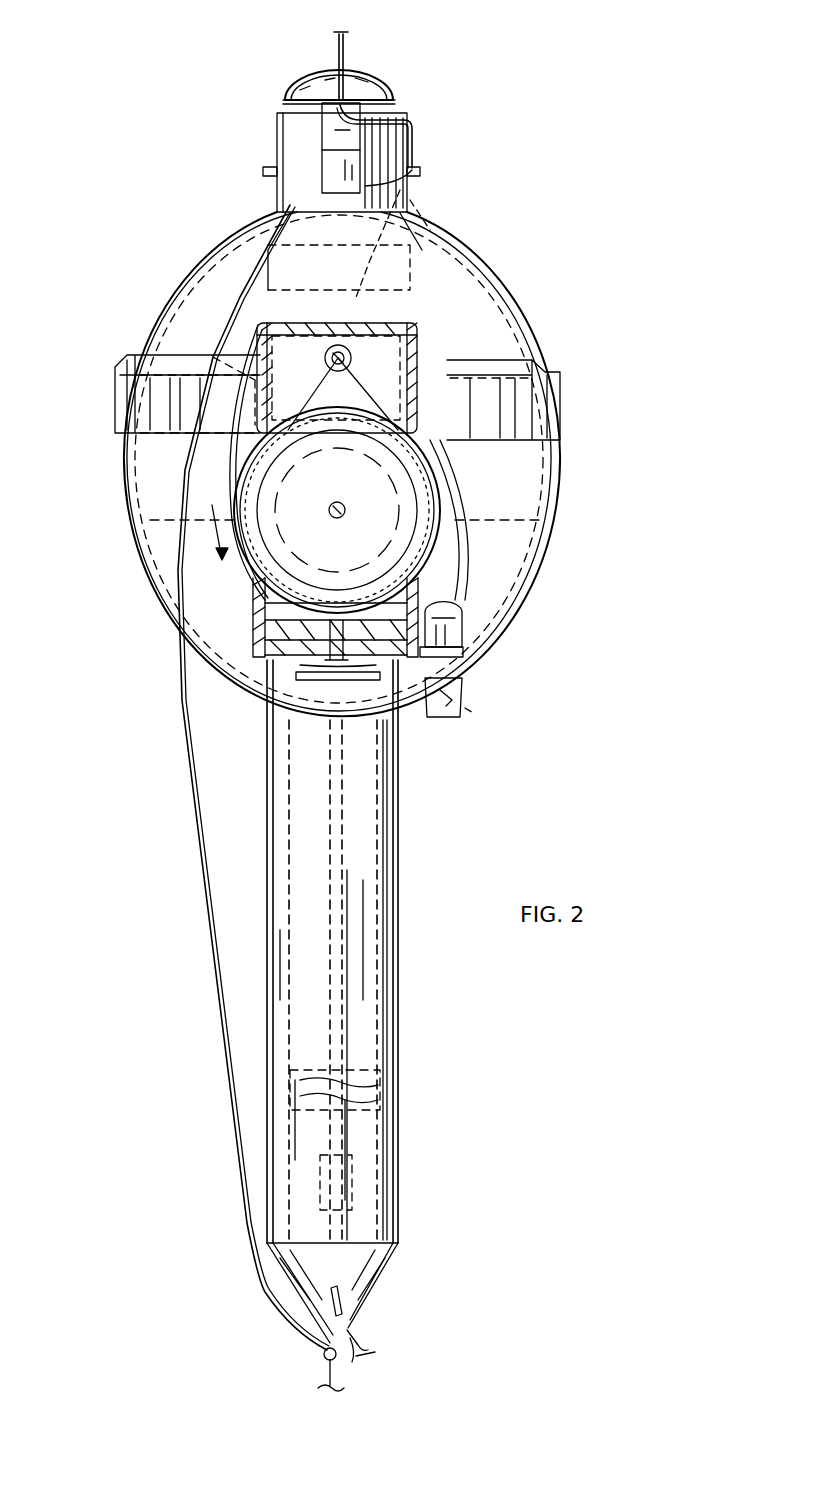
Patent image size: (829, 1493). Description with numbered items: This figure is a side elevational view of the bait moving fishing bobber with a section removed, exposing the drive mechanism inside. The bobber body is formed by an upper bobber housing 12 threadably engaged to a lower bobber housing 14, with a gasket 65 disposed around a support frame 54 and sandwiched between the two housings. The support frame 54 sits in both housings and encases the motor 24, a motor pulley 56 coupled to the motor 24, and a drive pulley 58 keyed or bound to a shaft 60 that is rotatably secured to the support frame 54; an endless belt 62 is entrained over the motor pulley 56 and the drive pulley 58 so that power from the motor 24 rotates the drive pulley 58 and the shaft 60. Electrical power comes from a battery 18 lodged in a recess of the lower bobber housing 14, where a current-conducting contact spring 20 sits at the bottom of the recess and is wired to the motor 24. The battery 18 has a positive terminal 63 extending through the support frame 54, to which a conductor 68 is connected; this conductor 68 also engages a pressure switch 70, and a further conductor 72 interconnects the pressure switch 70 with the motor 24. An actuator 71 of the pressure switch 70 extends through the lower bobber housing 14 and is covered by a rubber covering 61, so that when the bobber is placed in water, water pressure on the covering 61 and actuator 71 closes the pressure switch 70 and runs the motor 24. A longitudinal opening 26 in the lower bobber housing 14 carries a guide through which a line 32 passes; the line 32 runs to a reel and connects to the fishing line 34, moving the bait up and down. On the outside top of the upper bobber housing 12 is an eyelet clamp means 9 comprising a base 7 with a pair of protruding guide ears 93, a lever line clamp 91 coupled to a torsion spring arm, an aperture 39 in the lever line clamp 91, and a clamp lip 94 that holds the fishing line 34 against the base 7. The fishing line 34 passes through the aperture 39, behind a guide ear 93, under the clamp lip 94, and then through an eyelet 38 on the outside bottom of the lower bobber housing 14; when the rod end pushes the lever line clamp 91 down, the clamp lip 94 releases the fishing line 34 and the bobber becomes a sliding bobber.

The eyelet clamp means 9 is at (185, 98).
The base 7 is at (300, 122).
The upper bobber housing 12 is at (463, 232).
The lower bobber housing 14 is at (525, 605).
The battery 18 is at (372, 882).
The contact spring 20 is at (385, 1073).
The motor 24 is at (405, 188).
The longitudinal opening 26 is at (342, 1155).
The line 32 is at (355, 1338).
The fishing line 34 is at (338, 46).
The eyelet 38 is at (323, 1360).
The aperture 39 is at (345, 72).
The support frame 54 is at (490, 262).
The motor pulley 56 is at (333, 352).
The drive pulley 58 is at (390, 498).
The shaft 60 is at (297, 383).
The rubber covering 61 is at (464, 688).
The endless belt 62 is at (300, 383).
The positive terminal 63 is at (292, 712).
The gasket 65 is at (448, 372).
The conductor 68 is at (360, 628).
The pressure switch 70 is at (455, 625).
The actuator 71 is at (468, 712).
The conductor 72 is at (450, 575).
The lever line clamp 91 is at (392, 80).
The guide ears 93 is at (262, 170).
The clamp lip 94 is at (338, 165).